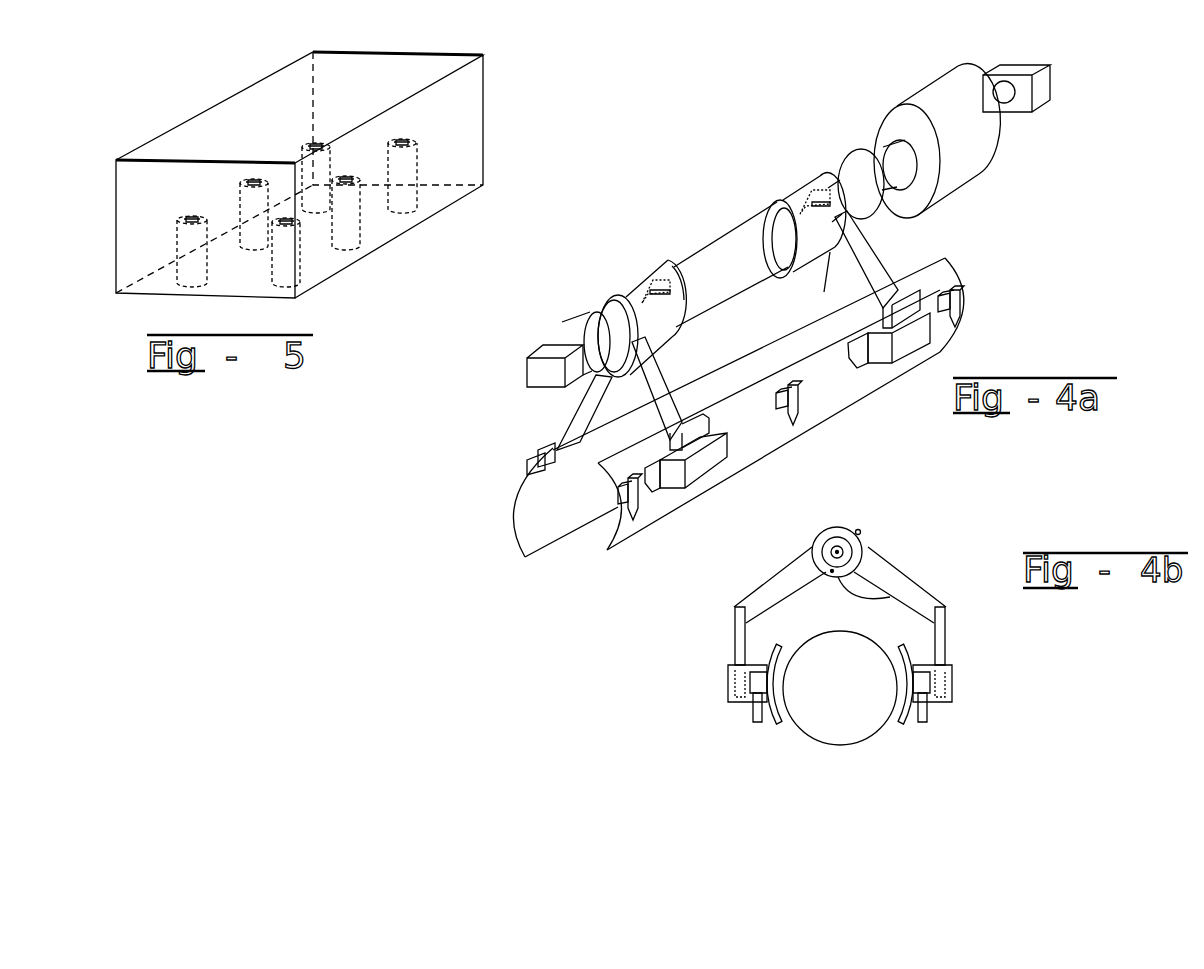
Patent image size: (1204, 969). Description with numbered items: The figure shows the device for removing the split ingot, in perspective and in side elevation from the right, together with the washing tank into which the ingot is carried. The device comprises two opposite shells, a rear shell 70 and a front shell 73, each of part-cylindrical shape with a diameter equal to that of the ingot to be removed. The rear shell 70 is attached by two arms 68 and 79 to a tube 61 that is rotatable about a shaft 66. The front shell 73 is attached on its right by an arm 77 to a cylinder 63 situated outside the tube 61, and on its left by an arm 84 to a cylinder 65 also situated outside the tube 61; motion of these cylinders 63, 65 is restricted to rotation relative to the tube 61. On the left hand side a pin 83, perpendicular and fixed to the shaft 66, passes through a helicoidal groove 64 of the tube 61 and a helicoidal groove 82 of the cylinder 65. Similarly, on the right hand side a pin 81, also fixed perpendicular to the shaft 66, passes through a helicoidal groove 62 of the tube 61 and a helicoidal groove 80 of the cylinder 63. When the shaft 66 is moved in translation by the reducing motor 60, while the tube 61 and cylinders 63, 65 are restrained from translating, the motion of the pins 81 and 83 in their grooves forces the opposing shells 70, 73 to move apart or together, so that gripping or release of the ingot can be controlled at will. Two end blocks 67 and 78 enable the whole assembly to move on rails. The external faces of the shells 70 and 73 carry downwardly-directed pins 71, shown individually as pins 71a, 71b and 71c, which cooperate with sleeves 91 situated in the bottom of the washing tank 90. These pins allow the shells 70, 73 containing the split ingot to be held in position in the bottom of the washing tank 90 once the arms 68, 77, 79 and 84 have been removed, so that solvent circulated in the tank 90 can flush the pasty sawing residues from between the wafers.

In FIG. 4A, the reducing motor 60 is at (943, 100).
In FIG. 4A, the tube 61 is at (860, 153).
In FIG. 4B, the tube 61 is at (890, 597).
In FIG. 4A, the helicoidal groove 62 is at (802, 192).
In FIG. 4A, the cylinder 63 is at (778, 198).
In FIG. 4A, the helicoidal groove 64 is at (640, 275).
In FIG. 4A, the cylinder 65 is at (618, 297).
In FIG. 4B, the cylinder 65 is at (835, 530).
In FIG. 4A, the shaft 66 is at (588, 338).
In FIG. 4B, the shaft 66 is at (853, 553).
In FIG. 4A, the end block 67 is at (537, 367).
In FIG. 4A, the arm 68 is at (575, 410).
In FIG. 4B, the arm 68 is at (760, 605).
In FIG. 4A, the rear shell 70 is at (540, 490).
In FIG. 4B, the rear shell 70 is at (775, 722).
In FIG. 4B, the downwardly-directed pins 71 is at (920, 712).
In FIG. 4A, the downwardly-directed pin 71a is at (640, 497).
In FIG. 4A, the downwardly-directed pin 71b is at (798, 398).
In FIG. 4A, the downwardly-directed pin 71c is at (950, 308).
In FIG. 4A, the front shell 73 is at (826, 383).
In FIG. 4B, the front shell 73 is at (905, 725).
In FIG. 4A, the arm 77 is at (873, 247).
In FIG. 4A, the end block 78 is at (1040, 88).
In FIG. 4A, the arm 79 is at (875, 232).
In FIG. 4A, the helicoidal groove 80 is at (838, 165).
In FIG. 4A, the pin 81 is at (828, 168).
In FIG. 4A, the helicoidal groove 82 is at (687, 262).
In FIG. 4A, the pin 83 is at (650, 282).
In FIG. 4B, the pin 83 is at (860, 532).
In FIG. 4A, the arm 84 is at (638, 378).
In FIG. 4B, the arm 84 is at (940, 632).
In FIG. 5, the washing tank 90 is at (155, 187).
In FIG. 5, the sleeves 91 is at (183, 248).